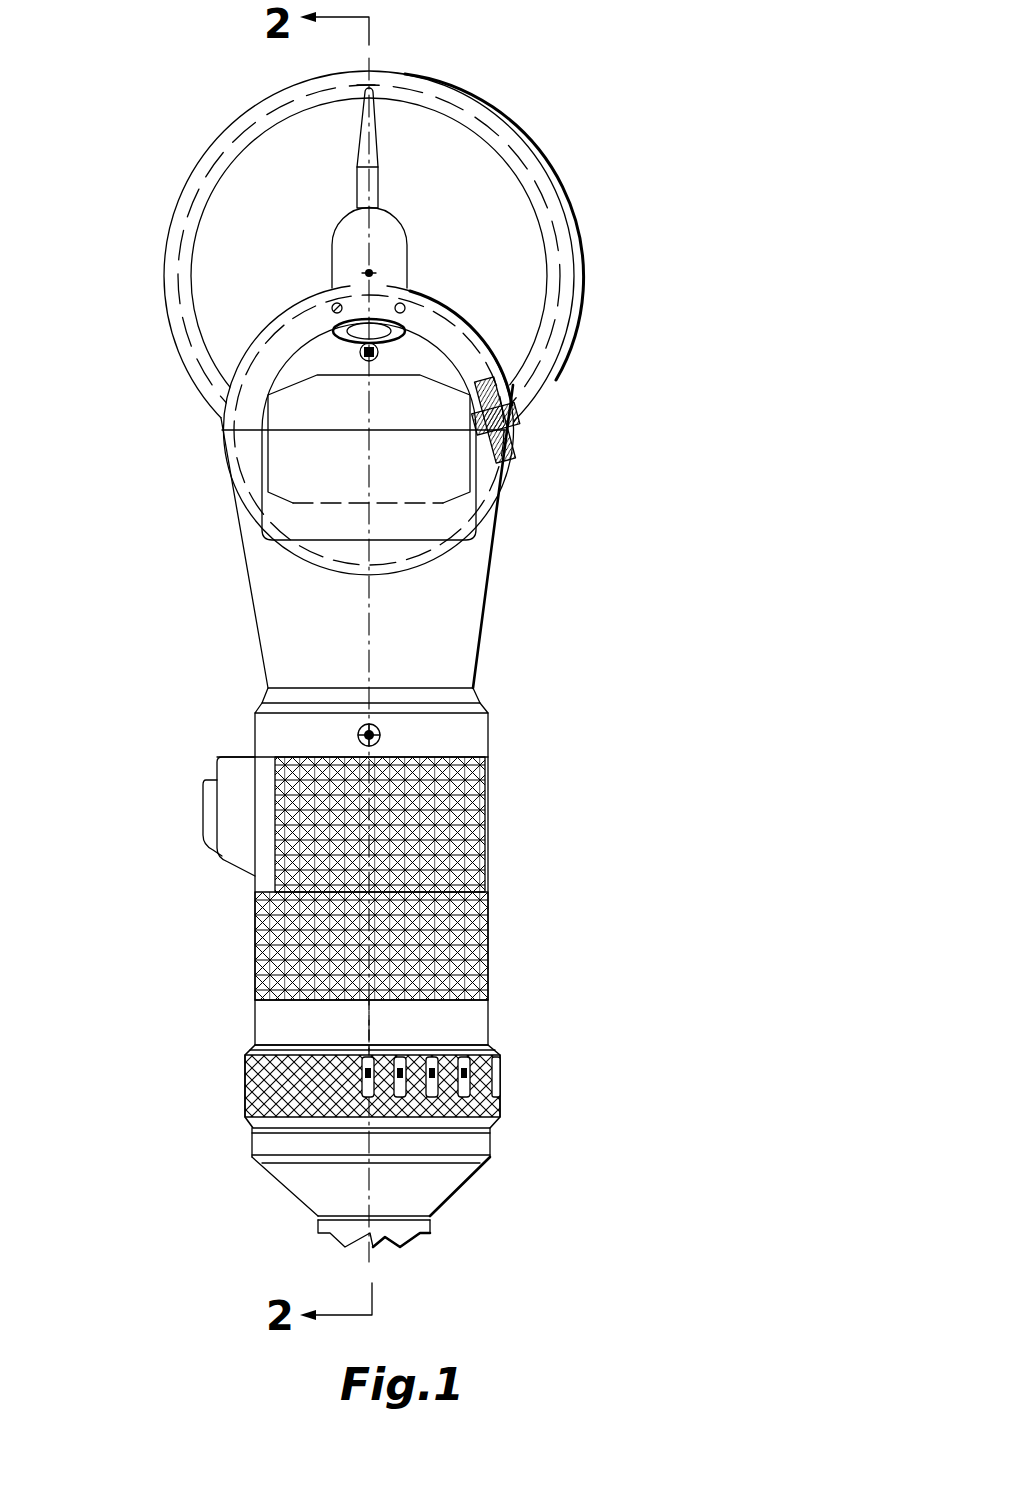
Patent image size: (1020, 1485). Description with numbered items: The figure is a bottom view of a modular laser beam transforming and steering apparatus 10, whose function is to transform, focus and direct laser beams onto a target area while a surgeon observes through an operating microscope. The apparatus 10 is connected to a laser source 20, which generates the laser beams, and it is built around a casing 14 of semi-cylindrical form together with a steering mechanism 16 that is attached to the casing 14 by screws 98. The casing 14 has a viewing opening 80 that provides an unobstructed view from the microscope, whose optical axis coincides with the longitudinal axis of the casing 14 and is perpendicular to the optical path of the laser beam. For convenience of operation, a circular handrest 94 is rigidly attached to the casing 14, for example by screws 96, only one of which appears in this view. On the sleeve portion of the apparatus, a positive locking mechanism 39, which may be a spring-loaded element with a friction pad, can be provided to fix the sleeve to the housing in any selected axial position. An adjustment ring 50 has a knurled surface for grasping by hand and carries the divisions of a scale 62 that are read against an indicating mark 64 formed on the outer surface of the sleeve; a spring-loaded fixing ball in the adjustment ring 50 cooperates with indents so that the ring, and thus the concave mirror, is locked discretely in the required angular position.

The modular apparatus for transforming and steering beams 10 is at (238, 958).
The casing 14 is at (232, 582).
The steering mechanism 16 is at (252, 275).
The laser source 20 is at (405, 1232).
The positive locking mechanism 39 is at (188, 820).
The adjustment ring 50 is at (268, 1098).
The scale 62 is at (502, 1103).
The indicating mark 64 is at (366, 1015).
The viewing opening 80 is at (442, 517).
The circular handrest 94 is at (552, 220).
The screws 96 is at (513, 432).
The screws 98 is at (400, 308).